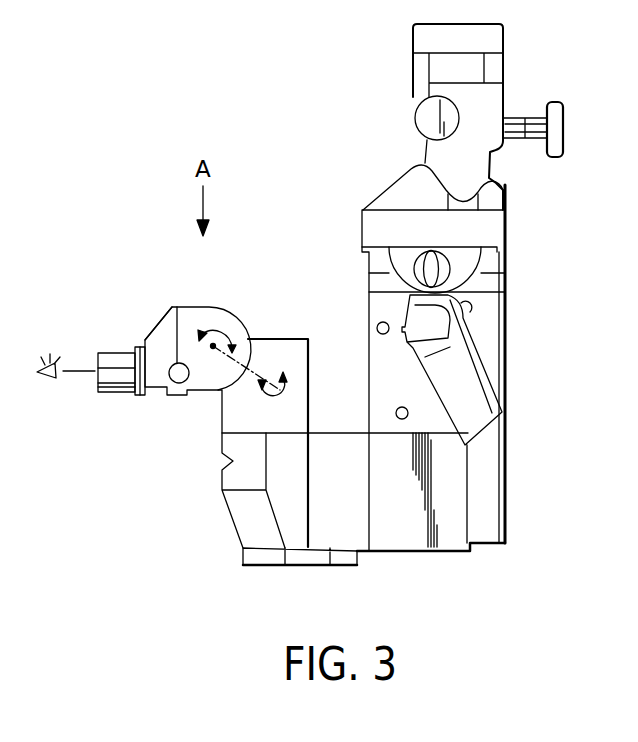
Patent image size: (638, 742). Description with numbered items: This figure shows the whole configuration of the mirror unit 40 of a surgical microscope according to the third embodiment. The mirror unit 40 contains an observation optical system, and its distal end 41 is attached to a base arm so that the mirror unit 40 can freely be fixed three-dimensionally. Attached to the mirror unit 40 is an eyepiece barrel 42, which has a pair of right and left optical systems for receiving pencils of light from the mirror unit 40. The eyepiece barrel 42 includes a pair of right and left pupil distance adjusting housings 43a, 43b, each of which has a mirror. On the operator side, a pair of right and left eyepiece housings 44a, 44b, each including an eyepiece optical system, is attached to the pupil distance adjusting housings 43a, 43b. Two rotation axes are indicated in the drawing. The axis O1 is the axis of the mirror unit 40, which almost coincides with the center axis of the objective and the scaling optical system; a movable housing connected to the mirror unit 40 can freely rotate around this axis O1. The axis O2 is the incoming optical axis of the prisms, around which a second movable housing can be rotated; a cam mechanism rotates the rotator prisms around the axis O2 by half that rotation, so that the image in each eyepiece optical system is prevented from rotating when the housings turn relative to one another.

The mirror unit 40 is at (430, 553).
The distal end 41 is at (505, 32).
The eyepiece barrel 42 is at (178, 324).
The pupil distance adjusting housing 43a is at (141, 308).
The pupil distance adjusting housing 43b is at (162, 330).
The eyepiece housing 44a is at (94, 346).
The eyepiece housing 44b is at (110, 362).
The axis O1 is at (262, 384).
The axis O2 is at (212, 365).